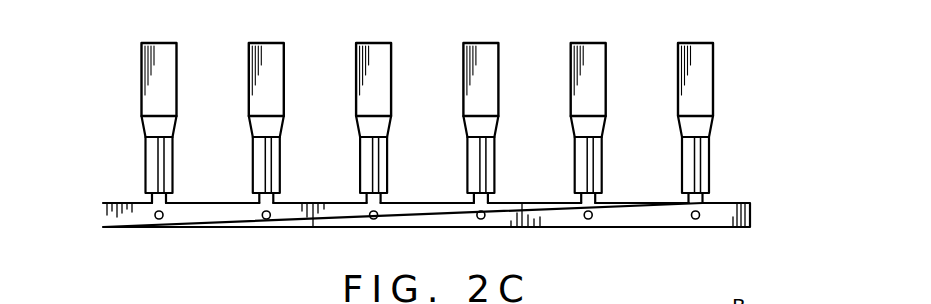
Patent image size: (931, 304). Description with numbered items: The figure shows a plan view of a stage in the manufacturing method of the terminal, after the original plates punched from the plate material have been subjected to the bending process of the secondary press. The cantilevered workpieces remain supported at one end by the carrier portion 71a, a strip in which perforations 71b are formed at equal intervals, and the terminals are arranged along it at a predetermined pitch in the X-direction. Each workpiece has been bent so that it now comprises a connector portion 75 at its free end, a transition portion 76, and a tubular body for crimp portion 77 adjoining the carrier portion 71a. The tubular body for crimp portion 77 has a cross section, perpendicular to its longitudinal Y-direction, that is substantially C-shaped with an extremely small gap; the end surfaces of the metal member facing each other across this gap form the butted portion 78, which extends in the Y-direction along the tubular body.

The carrier portion 71a is at (758, 213).
The perforations 71b is at (158, 221).
The connector portion 75 is at (181, 74).
The transition portion 76 is at (718, 127).
The tubular body for crimp portion 77 is at (140, 156).
The butted portion 78 is at (158, 180).